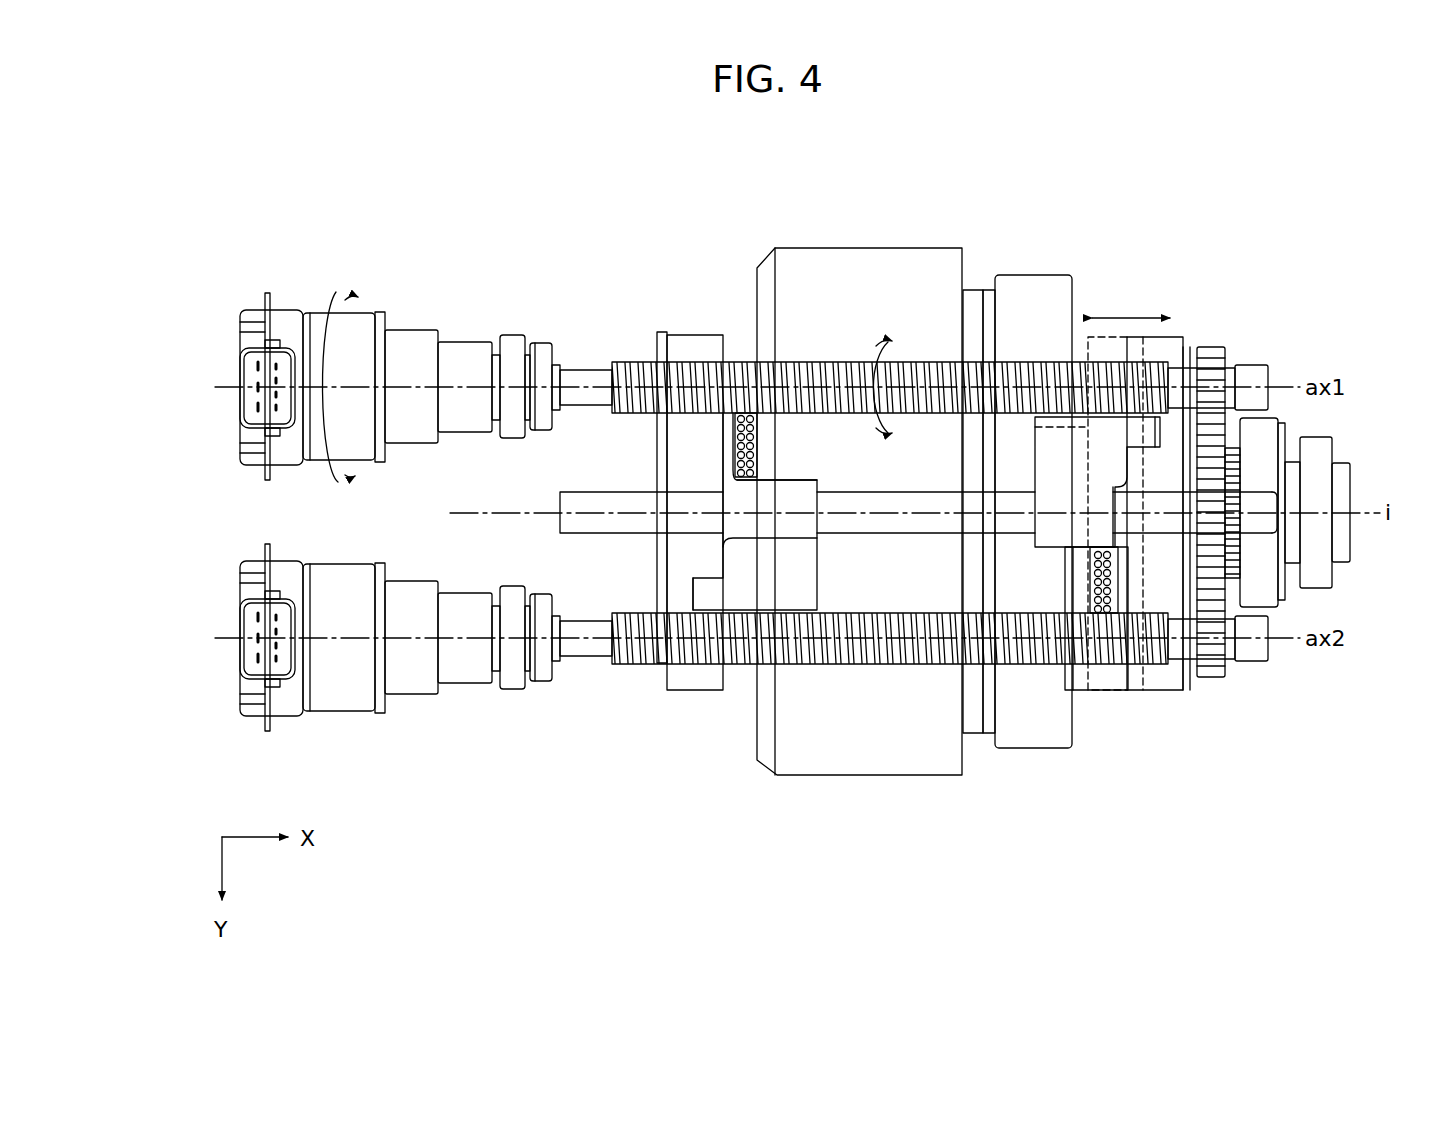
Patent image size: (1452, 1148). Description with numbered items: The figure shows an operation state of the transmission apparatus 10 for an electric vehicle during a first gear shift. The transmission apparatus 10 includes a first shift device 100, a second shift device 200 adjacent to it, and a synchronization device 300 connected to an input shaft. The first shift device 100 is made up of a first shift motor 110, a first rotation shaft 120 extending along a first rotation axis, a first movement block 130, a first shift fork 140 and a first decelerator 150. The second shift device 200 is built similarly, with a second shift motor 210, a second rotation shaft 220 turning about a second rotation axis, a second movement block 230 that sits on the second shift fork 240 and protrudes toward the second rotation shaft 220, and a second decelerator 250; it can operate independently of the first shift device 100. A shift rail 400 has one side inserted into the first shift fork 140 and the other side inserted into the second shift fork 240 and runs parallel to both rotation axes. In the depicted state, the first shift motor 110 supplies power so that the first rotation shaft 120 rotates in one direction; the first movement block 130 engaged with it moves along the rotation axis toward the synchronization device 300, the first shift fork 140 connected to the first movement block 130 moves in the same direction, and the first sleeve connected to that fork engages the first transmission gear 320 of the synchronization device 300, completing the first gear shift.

The transmission apparatus 10 is at (1365, 134).
The first shift device 100 is at (376, 361).
The first shift motor 110 is at (313, 323).
The first rotation shaft 120 is at (643, 365).
The first movement block 130 is at (1140, 420).
The first shift fork 140 is at (1172, 348).
The first decelerator 150 is at (465, 350).
The second shift device 200 is at (376, 665).
The second shift motor 210 is at (344, 668).
The second rotation shaft 220 is at (643, 668).
The second movement block 230 is at (750, 665).
The second shift fork 240 is at (695, 692).
The second decelerator 250 is at (468, 663).
The synchronization device 300 is at (885, 783).
The first transmission gear 320 is at (1103, 668).
The shift rail 400 is at (1262, 520).